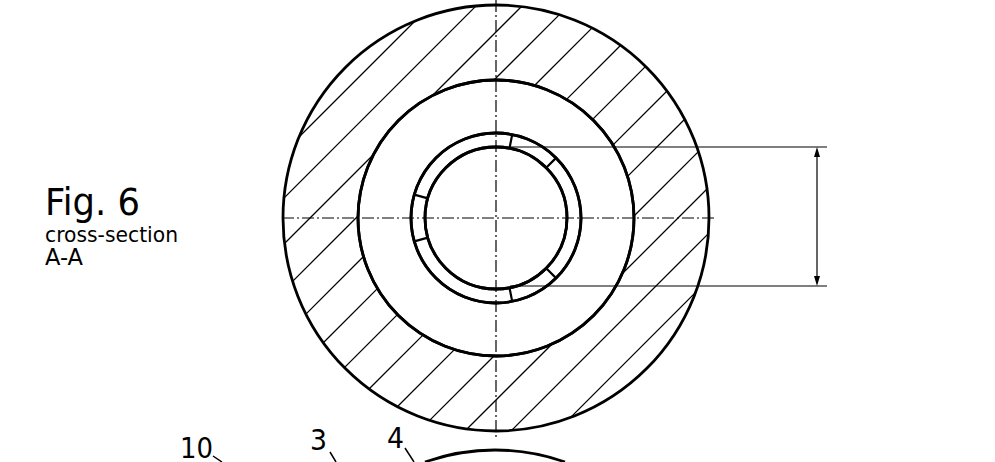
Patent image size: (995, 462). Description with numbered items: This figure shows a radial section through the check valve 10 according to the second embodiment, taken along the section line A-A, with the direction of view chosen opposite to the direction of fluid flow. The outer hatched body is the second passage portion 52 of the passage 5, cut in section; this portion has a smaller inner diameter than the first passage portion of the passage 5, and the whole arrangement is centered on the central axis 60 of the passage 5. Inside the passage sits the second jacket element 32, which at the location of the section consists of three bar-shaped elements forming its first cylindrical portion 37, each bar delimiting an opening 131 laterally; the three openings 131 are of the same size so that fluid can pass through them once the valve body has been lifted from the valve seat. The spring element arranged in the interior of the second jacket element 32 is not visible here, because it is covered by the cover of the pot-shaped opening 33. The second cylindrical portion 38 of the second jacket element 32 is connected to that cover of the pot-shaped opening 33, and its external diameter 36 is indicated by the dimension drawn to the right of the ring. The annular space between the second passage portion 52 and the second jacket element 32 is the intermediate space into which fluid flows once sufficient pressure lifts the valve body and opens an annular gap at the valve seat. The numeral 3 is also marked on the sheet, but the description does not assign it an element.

The check valve 10 is at (242, 85).
The opening 131 is at (452, 157).
The second passage portion 52 is at (650, 103).
The passage 5 is at (626, 204).
The external diameter 36 is at (817, 223).
The second cylindrical portion 38 is at (427, 203).
The central axis 60 is at (493, 218).
The pot-shaped opening 33 is at (453, 257).
The inner channel 3 is at (410, 293).
The second jacket element 32 is at (537, 293).
The first cylindrical portion 37 is at (522, 308).